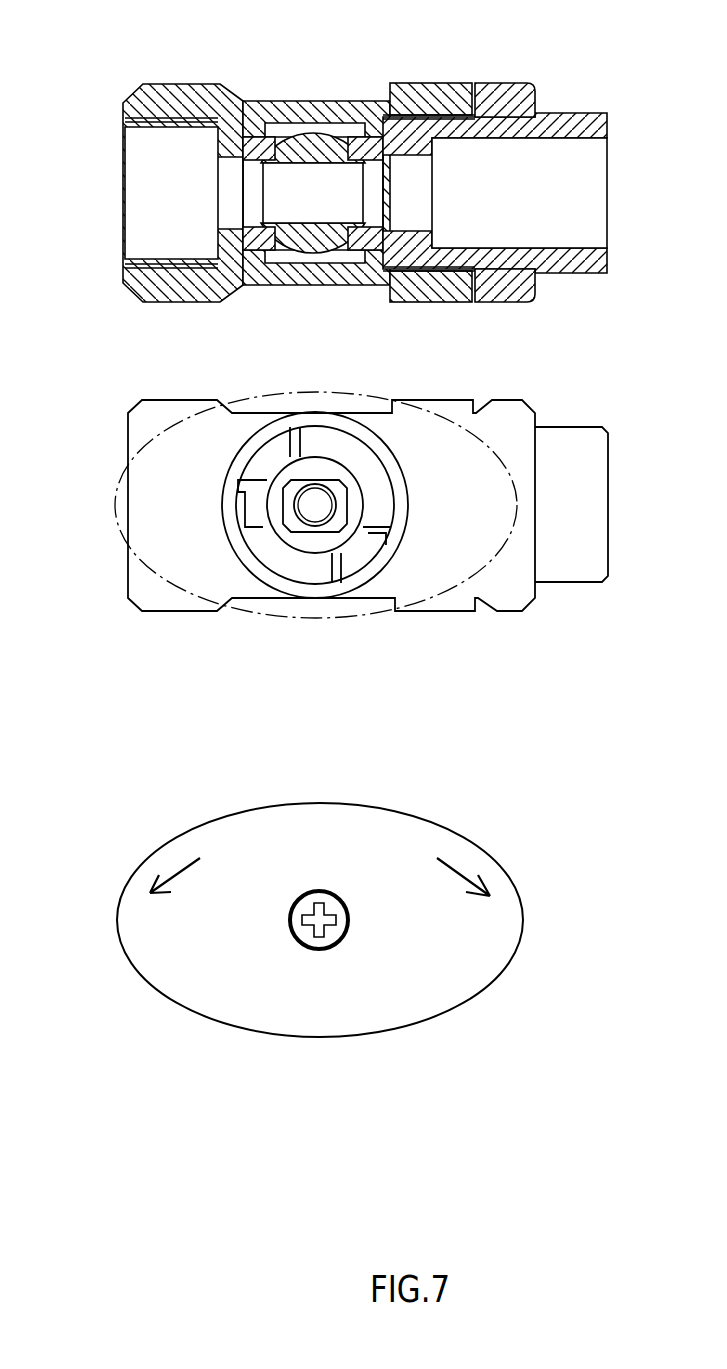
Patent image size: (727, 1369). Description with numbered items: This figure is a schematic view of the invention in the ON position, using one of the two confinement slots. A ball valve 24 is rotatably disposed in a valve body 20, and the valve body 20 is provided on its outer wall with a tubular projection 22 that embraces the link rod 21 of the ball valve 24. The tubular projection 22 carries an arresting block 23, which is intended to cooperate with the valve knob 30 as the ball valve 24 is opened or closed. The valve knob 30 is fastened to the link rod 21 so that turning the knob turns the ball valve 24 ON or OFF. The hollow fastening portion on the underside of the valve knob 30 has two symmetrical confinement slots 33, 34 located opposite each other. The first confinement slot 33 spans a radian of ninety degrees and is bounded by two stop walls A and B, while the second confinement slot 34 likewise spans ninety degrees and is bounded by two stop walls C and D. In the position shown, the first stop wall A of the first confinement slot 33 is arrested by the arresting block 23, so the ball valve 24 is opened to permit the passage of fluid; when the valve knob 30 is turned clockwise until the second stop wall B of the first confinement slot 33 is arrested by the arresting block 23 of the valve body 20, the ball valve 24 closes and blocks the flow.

The valve body 20 is at (330, 100).
The link rod 21 is at (345, 518).
The tubular projection 22 is at (367, 500).
The arresting block 23 is at (255, 514).
The ball valve 24 is at (312, 147).
The valve knob 30 is at (482, 441).
The first confinement slot 33 is at (268, 555).
The second confinement slot 34 is at (372, 465).
The first stop wall A is at (254, 510).
The second stop wall B is at (334, 565).
The stop wall C is at (393, 527).
The stop wall D is at (305, 432).